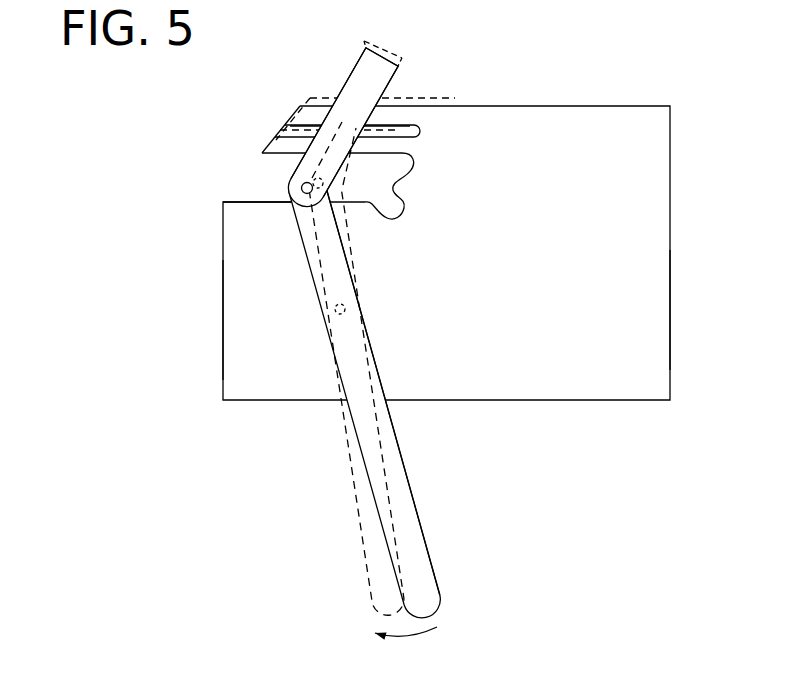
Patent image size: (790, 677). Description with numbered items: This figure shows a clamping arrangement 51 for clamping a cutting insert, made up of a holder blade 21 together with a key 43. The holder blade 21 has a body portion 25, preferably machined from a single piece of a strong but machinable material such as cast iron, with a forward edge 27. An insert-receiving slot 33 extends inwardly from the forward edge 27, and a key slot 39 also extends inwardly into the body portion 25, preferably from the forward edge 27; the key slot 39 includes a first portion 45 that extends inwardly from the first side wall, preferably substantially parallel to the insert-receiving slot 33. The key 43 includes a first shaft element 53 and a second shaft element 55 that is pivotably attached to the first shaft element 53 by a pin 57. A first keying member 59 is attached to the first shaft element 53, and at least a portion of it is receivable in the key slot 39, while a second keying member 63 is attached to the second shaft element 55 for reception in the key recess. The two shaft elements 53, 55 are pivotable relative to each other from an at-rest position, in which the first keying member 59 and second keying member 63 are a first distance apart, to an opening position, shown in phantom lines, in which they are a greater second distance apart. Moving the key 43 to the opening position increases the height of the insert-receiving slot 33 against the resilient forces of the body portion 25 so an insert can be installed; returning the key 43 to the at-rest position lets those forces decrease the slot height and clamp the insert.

The holder blade 21 is at (682, 310).
The body portion 25 is at (640, 198).
The forward edge 27 is at (222, 318).
The insert-receiving slot 33 is at (240, 193).
The key slot 39 is at (407, 127).
The first portion of the key slot 45 is at (388, 127).
The clamping arrangement 51 is at (290, 75).
The first shaft element 53 is at (347, 80).
The second shaft element 55 is at (410, 478).
The pin 57 is at (301, 186).
The first keying member 59 is at (308, 100).
The key 43 is at (432, 525).
The second keying member 63 is at (346, 307).